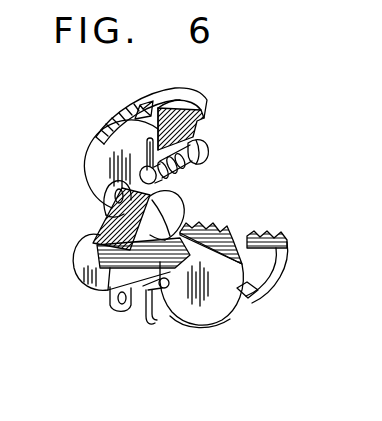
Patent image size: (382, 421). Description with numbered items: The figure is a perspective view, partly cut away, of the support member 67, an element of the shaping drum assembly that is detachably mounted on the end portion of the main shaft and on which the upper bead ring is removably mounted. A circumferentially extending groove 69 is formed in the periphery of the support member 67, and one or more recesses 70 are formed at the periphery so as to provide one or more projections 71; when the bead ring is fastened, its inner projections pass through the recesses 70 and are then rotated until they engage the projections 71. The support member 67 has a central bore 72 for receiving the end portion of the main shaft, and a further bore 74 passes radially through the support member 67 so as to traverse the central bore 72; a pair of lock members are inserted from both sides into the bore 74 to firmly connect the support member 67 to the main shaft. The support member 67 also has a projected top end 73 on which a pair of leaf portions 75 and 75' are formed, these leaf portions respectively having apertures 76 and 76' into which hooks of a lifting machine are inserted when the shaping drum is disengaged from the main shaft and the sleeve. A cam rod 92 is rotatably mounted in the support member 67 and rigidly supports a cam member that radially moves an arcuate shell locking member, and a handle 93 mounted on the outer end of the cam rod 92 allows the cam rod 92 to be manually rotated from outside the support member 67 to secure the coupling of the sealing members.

The support member 67 is at (96, 128).
The circumferentially extending groove 69 is at (162, 116).
The recess 70 is at (199, 104).
The projection 71 is at (136, 114).
The central bore 72 is at (197, 229).
The projected top end 73 is at (82, 254).
The bore 74 is at (180, 208).
The leaf portion 75 is at (94, 180).
The leaf portion 75' is at (109, 315).
The aperture 76 is at (87, 190).
The aperture 76' is at (98, 302).
The cam rod 92 is at (194, 153).
The handle 93 is at (147, 152).